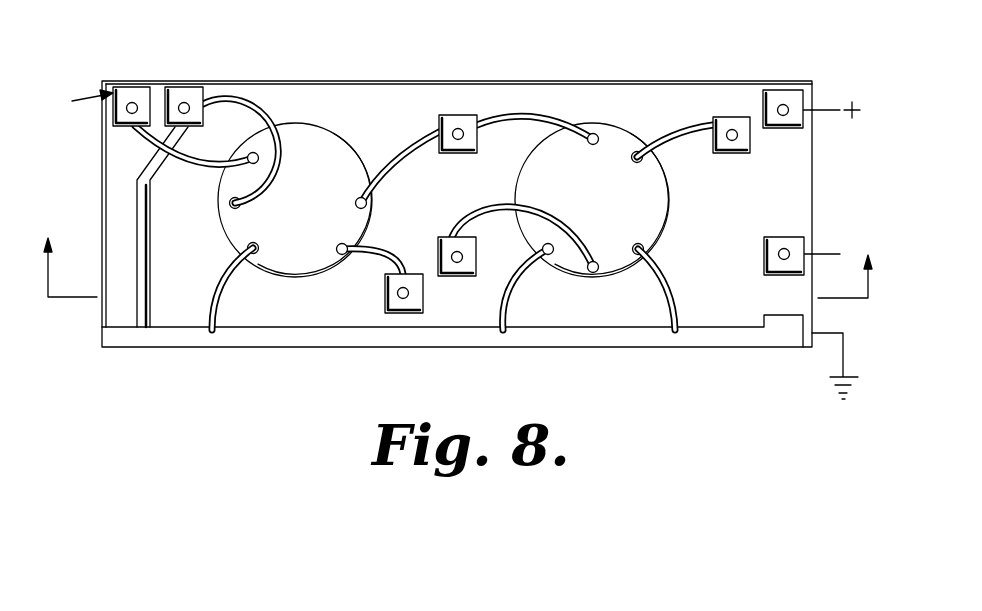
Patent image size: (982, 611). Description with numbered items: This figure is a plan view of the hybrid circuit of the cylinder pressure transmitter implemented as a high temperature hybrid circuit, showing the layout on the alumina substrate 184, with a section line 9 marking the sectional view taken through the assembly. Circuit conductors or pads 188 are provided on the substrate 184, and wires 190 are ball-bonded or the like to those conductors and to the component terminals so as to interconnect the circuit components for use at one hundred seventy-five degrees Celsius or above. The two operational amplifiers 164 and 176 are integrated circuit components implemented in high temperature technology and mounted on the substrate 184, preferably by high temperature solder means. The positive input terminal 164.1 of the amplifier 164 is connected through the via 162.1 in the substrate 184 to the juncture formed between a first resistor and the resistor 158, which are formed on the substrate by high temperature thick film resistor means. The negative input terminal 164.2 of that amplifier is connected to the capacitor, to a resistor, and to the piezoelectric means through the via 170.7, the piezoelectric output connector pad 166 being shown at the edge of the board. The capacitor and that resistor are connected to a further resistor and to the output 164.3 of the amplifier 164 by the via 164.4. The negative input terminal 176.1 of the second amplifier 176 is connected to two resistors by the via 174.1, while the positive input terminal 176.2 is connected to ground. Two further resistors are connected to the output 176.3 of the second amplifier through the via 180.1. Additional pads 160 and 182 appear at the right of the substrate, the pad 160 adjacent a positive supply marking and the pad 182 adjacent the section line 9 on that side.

The resistor 158 is at (137, 300).
The positive supply terminal pad 160 is at (797, 92).
The via 162.1 is at (185, 103).
The operational amplifier 164 is at (318, 126).
The positive input terminal 164.1 is at (368, 206).
The negative input terminal 164.2 is at (250, 162).
The output 164.3 is at (350, 243).
The via 164.4 is at (417, 312).
The piezoelectric output connector pad 166 is at (79, 107).
The via 170.7 is at (133, 103).
The via 174.1 is at (461, 263).
The second operational amplifier 176 is at (655, 192).
The negative input terminal 176.1 is at (587, 273).
The positive input terminal 176.2 is at (543, 250).
The output 176.3 is at (596, 133).
The via 180.1 is at (734, 130).
The output terminal pad 182 is at (790, 252).
The alumina substrate 184 is at (581, 82).
The circuit conductors or pads 188 is at (206, 88).
The wires 190 is at (272, 113).
The section line 9- 9 is at (456, 268).